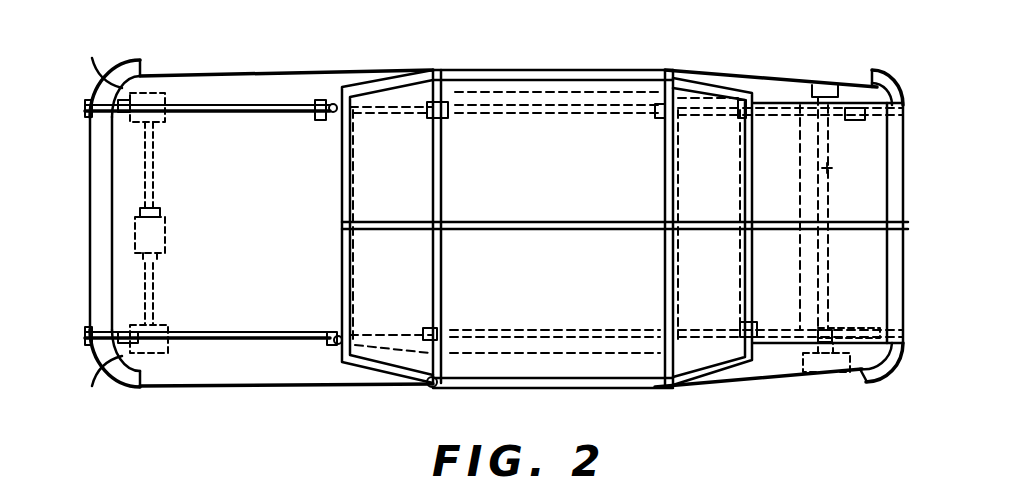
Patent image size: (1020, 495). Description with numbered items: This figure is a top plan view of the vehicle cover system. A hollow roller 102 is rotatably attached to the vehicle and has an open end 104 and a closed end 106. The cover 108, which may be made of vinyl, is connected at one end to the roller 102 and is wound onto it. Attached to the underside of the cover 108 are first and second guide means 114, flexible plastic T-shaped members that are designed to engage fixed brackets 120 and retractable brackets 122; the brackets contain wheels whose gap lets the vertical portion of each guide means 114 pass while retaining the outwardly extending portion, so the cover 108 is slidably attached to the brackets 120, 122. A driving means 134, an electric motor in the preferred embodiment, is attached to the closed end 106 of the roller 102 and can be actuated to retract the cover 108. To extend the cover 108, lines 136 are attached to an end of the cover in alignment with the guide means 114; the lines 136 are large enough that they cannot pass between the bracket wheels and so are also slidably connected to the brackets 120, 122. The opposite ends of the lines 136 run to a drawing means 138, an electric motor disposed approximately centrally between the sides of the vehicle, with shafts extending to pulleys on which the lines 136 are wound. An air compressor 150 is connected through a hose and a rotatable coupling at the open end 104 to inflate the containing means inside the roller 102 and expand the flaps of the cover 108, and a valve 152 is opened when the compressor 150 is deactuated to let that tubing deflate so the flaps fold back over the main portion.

The roller 102 is at (830, 168).
The open end 104 is at (833, 330).
The closed end 106 is at (850, 72).
The cover 108 is at (600, 196).
The guide means 114 is at (513, 113).
The fixed brackets 120 is at (80, 101).
The retractable brackets 122 is at (316, 68).
The driving means 134 is at (818, 82).
The lines 136 is at (235, 112).
The drawing means 138 is at (160, 233).
The air compressor 150 is at (822, 370).
The valve 152 is at (432, 388).